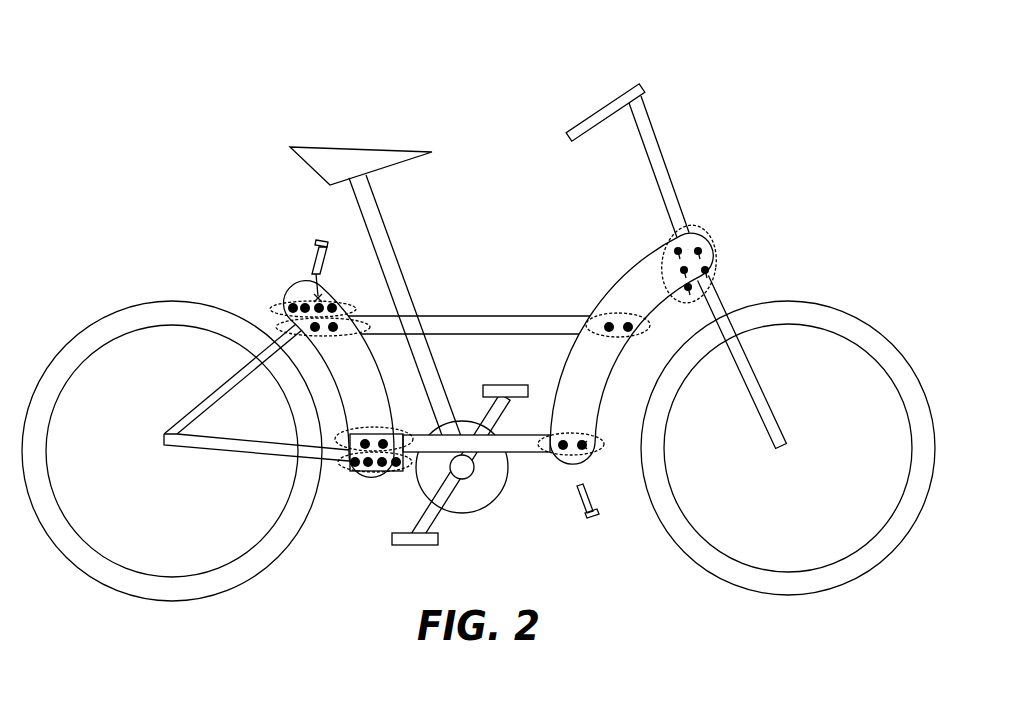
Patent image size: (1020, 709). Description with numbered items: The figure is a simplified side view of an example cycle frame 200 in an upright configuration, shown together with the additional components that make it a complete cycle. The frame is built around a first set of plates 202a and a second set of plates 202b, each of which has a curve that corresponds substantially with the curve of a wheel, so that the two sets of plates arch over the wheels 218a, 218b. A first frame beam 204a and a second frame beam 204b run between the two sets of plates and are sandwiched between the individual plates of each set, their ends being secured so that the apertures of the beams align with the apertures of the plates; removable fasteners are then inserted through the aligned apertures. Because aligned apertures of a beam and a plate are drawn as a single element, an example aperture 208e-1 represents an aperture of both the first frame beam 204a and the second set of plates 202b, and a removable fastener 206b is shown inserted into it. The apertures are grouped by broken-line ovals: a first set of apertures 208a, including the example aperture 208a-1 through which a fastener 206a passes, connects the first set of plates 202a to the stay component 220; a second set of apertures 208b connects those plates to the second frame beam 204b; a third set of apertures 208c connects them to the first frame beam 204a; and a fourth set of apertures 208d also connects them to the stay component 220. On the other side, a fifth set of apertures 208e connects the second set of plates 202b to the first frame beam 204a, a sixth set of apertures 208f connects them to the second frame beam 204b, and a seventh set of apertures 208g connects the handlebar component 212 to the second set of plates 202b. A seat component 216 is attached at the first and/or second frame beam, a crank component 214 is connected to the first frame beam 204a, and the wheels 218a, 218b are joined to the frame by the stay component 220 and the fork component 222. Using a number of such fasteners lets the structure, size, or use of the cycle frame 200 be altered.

The cycle frame 200 is at (138, 112).
The first set of plates 202a is at (289, 291).
The second set of plates 202b is at (624, 281).
The first frame beam 204a is at (533, 458).
The second frame beam 204b is at (490, 315).
The removable fastener 206a is at (320, 240).
The removable fastener 206b is at (594, 519).
The first set of apertures 208a is at (272, 311).
The aperture 208a-1 is at (321, 298).
The second set of apertures 208b is at (328, 337).
The third set of apertures 208c is at (370, 425).
The fourth set of apertures 208d is at (353, 472).
The fifth set of apertures 208e is at (597, 450).
The aperture 208e-1 is at (583, 440).
The sixth set of apertures 208f is at (592, 315).
The seventh set of apertures 208g is at (717, 252).
The handlebar component 212 is at (650, 117).
The crank component 214 is at (489, 511).
The seat component 216 is at (397, 147).
The wheel 218a is at (88, 325).
The wheel 218b is at (867, 317).
The stay component 220 is at (190, 451).
The fork component 222 is at (763, 420).